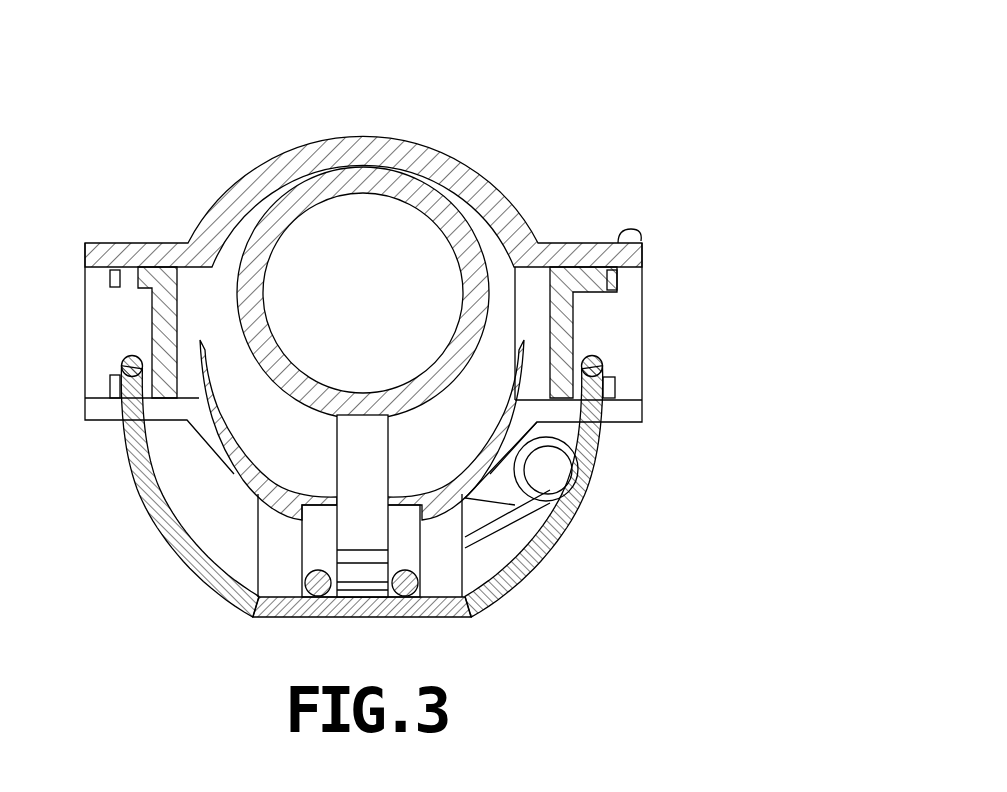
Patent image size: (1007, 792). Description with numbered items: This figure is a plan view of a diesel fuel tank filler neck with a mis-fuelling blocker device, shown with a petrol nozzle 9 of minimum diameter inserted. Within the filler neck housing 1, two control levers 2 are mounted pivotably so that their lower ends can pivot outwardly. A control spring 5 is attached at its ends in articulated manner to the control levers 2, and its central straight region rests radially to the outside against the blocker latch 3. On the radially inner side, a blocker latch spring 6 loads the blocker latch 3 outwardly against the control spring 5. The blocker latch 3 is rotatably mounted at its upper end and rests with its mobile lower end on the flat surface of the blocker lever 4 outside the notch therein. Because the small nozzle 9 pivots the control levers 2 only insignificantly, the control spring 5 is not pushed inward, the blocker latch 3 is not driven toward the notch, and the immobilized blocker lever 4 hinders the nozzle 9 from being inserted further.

The filler neck housing 1 is at (445, 167).
The control lever 2 is at (163, 312).
The blocker latch 3 is at (230, 615).
The blocker lever 4 is at (365, 452).
The control spring 5 is at (175, 542).
The blocker latch spring 6 is at (492, 538).
The nozzle 9 is at (448, 219).